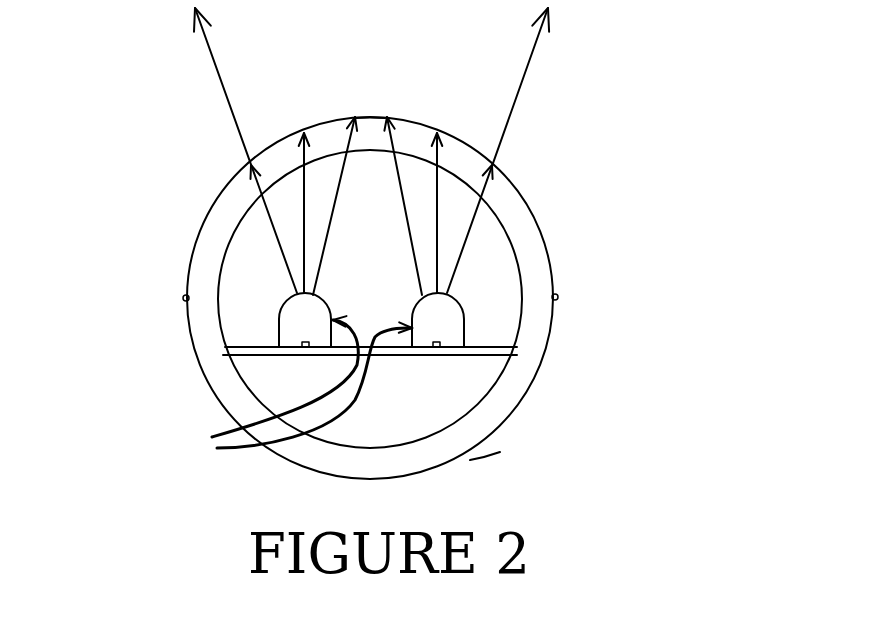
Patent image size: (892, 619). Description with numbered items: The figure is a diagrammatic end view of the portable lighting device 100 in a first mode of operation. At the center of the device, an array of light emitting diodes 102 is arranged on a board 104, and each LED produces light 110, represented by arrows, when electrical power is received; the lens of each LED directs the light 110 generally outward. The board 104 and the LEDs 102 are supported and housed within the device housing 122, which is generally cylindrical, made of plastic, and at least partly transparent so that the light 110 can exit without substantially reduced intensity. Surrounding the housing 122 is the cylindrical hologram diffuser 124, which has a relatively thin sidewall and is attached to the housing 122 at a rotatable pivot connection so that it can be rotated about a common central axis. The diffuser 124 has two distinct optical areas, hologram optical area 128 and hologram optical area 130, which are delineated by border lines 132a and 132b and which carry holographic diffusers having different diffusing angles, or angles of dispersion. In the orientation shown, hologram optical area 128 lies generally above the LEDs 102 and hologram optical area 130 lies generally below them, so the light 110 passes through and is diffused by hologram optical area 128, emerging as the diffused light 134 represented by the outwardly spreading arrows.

The lighting device 100 is at (607, 103).
The light emitting diodes 102 is at (284, 390).
The board 104 is at (253, 360).
The light 110 is at (303, 227).
The device housing 122 is at (500, 383).
The hologram diffuser 124 is at (532, 213).
The hologram optical area 128 is at (367, 117).
The hologram optical area 130 is at (487, 440).
The border line 132a is at (183, 298).
The border line 132b is at (558, 296).
The diffused light 134 is at (220, 68).